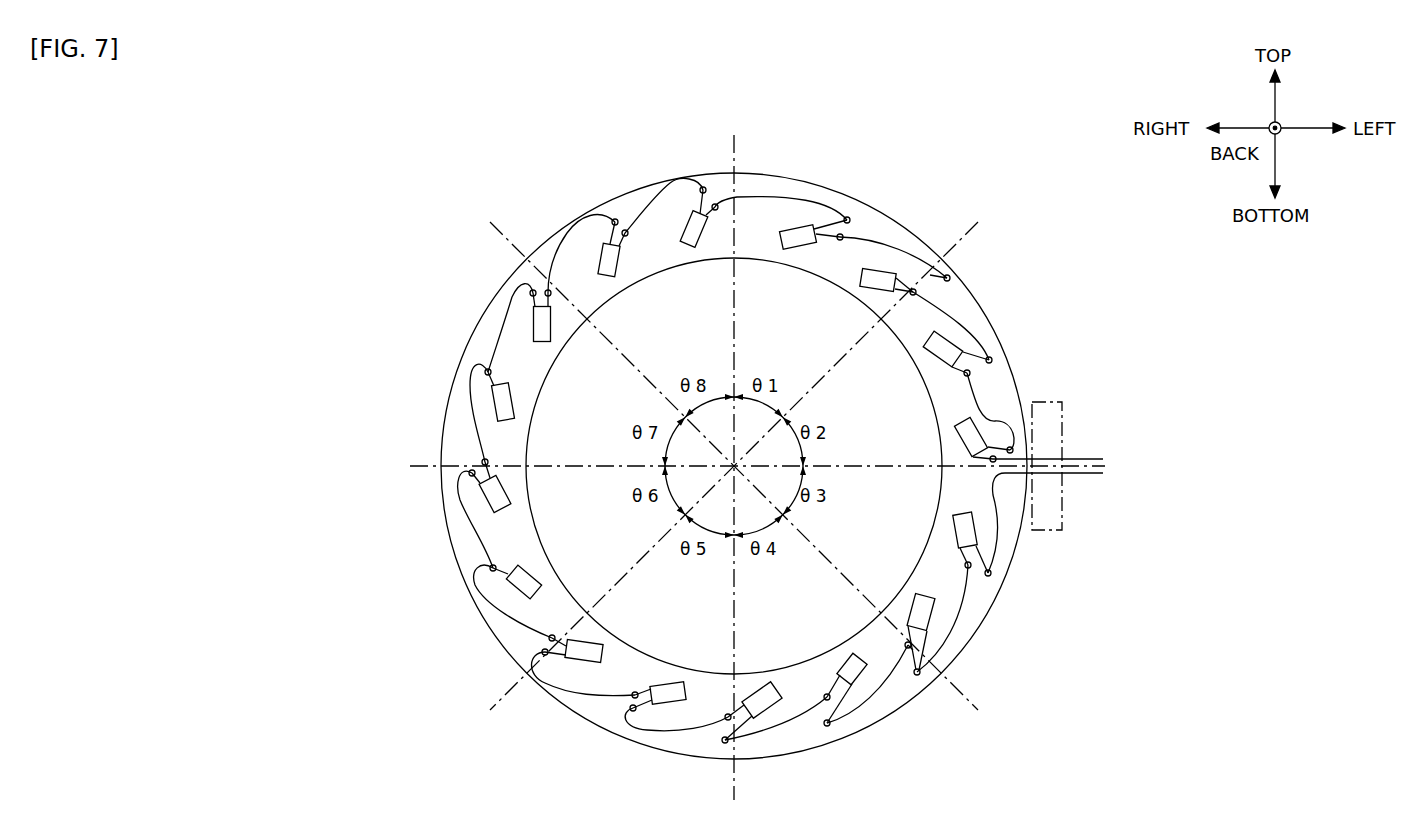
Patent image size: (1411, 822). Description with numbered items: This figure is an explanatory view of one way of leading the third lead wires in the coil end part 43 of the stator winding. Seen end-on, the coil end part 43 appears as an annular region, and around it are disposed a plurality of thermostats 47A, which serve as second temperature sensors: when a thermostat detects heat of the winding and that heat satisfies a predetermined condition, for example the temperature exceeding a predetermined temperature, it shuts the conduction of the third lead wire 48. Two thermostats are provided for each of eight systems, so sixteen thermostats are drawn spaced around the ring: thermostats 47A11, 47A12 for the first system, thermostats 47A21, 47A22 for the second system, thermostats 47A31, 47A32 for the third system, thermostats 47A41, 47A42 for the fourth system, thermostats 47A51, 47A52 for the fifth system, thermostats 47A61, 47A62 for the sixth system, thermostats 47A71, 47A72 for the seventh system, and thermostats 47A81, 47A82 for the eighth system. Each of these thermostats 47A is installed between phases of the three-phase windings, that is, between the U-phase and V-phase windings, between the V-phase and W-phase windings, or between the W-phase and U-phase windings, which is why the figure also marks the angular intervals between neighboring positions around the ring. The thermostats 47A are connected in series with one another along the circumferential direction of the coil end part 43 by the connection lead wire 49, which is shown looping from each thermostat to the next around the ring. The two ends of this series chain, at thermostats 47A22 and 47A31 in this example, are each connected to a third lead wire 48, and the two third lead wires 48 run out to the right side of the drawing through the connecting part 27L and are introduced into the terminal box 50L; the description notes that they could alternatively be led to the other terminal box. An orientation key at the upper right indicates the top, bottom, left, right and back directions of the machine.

The coil end part 43 is at (757, 185).
The thermostats 47A is at (922, 282).
The thermostat 47A11 is at (800, 232).
The thermostat 47A12 is at (878, 278).
The thermostat 47A21 is at (943, 349).
The thermostat 47A22 is at (967, 432).
The thermostat 47A31 is at (970, 530).
The thermostat 47A32 is at (928, 613).
The thermostat 47A41 is at (852, 672).
The thermostat 47A42 is at (762, 702).
The thermostat 47A51 is at (668, 695).
The thermostat 47A52 is at (584, 655).
The thermostat 47A61 is at (524, 582).
The thermostat 47A62 is at (495, 494).
The thermostat 47A71 is at (503, 402).
The thermostat 47A72 is at (540, 325).
The thermostat 47A81 is at (607, 255).
The thermostat 47A82 is at (693, 218).
The third lead wire 48 is at (1076, 457).
The connection lead wire 49 is at (480, 437).
The connecting part 27L is at (1033, 530).
The terminal box 50L is at (1177, 466).